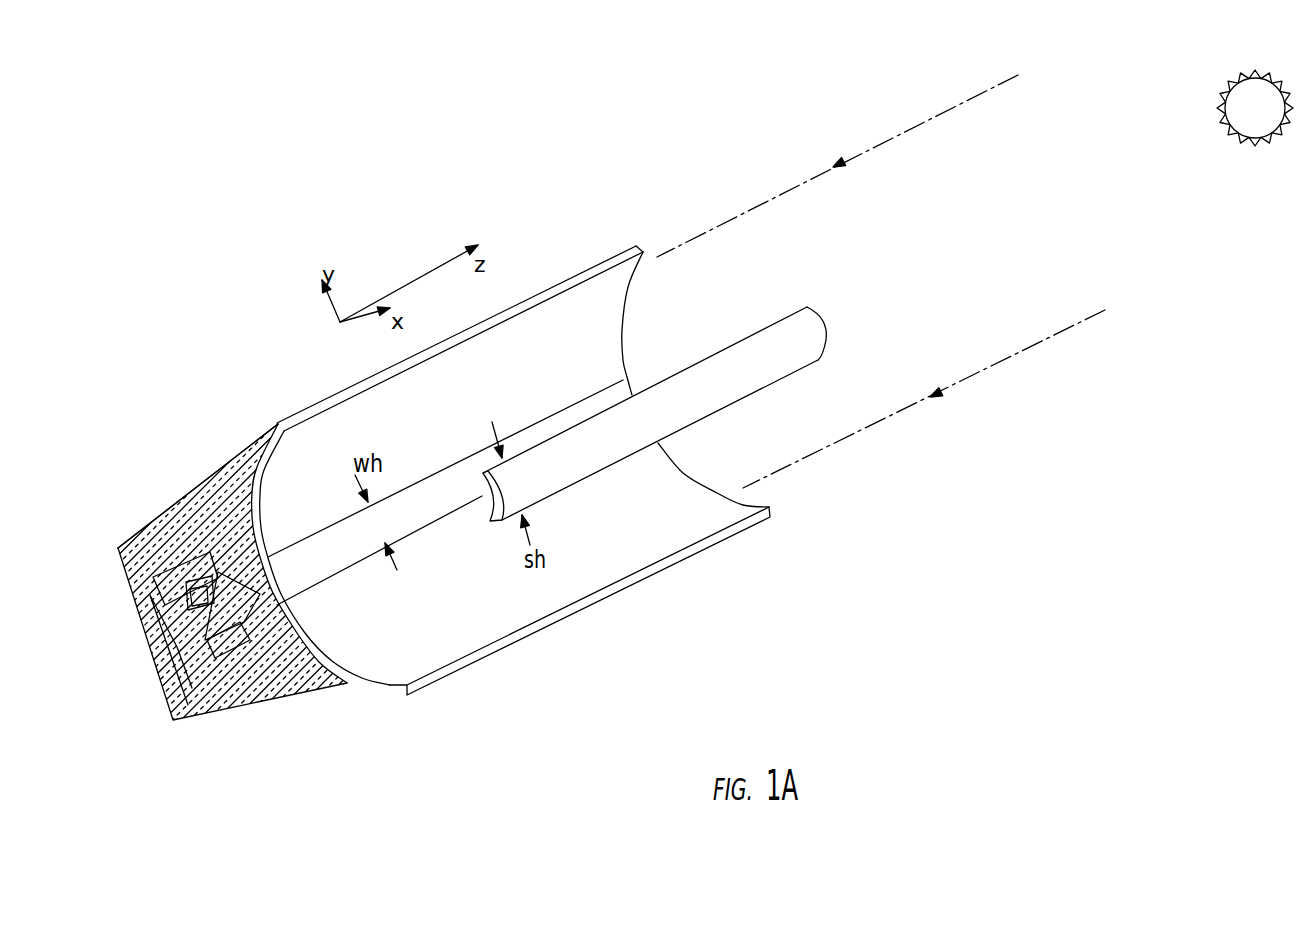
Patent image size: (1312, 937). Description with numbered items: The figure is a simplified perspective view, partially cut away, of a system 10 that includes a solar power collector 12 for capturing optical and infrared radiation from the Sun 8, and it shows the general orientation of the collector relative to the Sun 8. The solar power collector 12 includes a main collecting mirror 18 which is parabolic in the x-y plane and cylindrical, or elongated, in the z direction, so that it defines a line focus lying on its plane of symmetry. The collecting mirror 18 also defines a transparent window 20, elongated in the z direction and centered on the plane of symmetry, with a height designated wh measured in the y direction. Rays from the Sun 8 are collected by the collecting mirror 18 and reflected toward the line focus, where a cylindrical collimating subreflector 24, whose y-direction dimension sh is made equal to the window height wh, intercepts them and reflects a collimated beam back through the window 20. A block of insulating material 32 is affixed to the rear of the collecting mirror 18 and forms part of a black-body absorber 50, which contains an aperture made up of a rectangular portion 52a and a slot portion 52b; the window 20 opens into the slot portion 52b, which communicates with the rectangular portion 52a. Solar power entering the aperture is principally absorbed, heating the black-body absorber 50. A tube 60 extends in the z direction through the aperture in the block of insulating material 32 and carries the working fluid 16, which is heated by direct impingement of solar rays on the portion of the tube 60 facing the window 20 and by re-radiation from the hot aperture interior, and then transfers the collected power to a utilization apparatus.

The Sun 8 is at (1230, 80).
The system 10 is at (771, 730).
The solar power collector 12 is at (523, 699).
The working fluid 16 is at (151, 634).
The collecting mirror 18 is at (462, 357).
The transparent window 20 is at (323, 535).
The collimating subreflector 24 is at (848, 292).
The insulating material block 32 is at (202, 473).
The black-body absorber 50 is at (233, 633).
The rectangular portion of aperture 52a is at (172, 583).
The slot portion of aperture 52b is at (262, 598).
The tube 60 is at (210, 627).